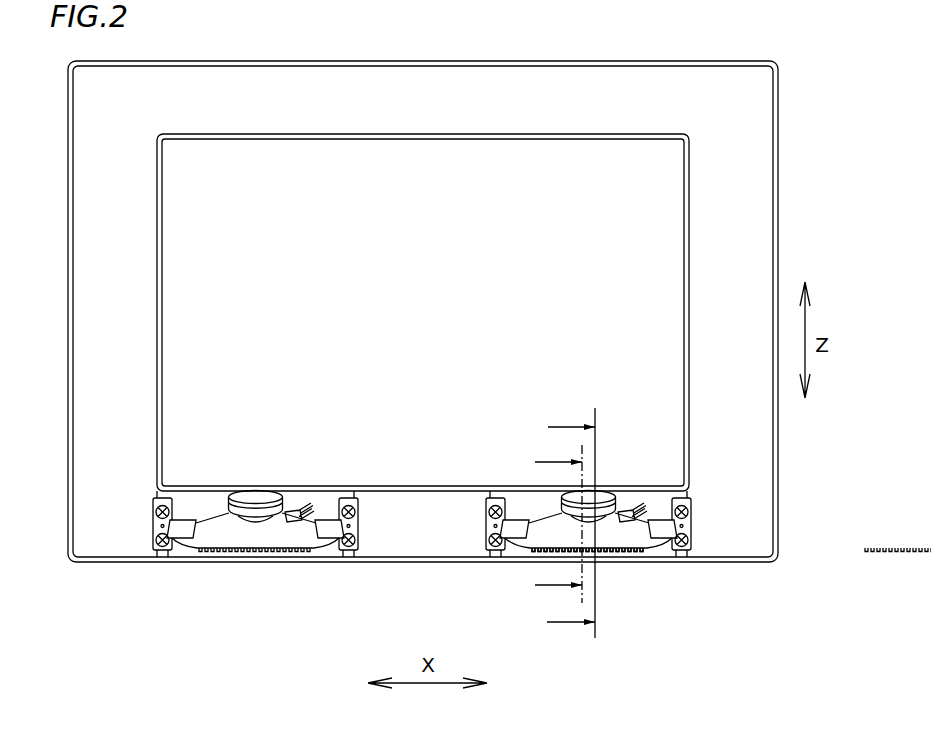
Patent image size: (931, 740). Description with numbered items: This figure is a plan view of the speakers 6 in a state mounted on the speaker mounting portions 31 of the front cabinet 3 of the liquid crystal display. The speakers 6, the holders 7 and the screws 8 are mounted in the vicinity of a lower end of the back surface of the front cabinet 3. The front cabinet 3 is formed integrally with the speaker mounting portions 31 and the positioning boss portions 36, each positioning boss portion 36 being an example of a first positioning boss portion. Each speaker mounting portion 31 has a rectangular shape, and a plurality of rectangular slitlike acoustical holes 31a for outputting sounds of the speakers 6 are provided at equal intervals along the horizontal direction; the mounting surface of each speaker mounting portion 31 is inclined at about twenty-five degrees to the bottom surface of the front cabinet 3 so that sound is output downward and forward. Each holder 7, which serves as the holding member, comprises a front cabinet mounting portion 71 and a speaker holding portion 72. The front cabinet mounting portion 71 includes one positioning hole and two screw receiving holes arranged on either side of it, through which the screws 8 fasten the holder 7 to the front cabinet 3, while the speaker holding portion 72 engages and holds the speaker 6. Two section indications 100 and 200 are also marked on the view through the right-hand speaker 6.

The front cabinet 3 is at (348, 100).
The speaker 6 is at (551, 562).
The holder 7 is at (421, 572).
The screw 8 is at (688, 540).
The speaker mounting portion 31 is at (551, 573).
The acoustical hole 31a is at (531, 553).
The positioning boss portion 36 is at (686, 526).
The front cabinet mounting portion 71 is at (688, 553).
The speaker holding portion 72 is at (419, 568).
The section line 100 is at (558, 525).
The section line 200 is at (570, 524).